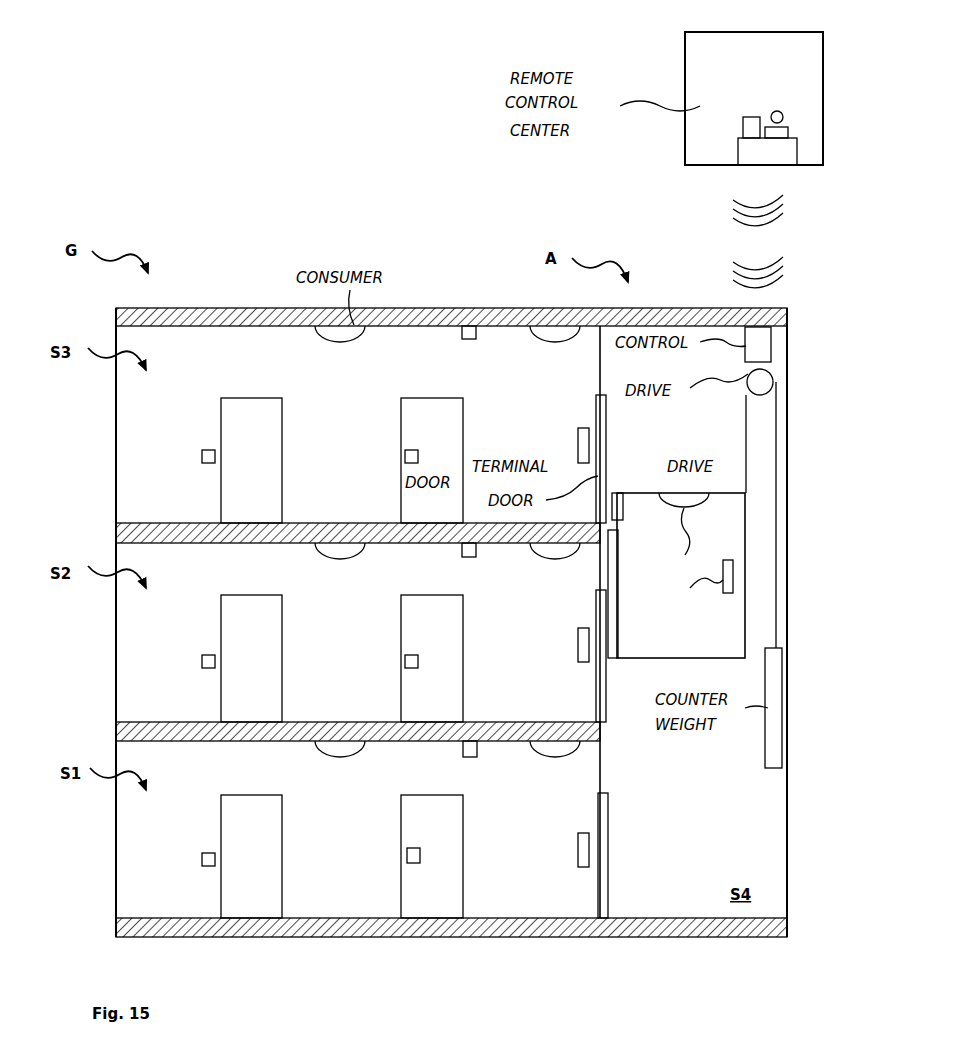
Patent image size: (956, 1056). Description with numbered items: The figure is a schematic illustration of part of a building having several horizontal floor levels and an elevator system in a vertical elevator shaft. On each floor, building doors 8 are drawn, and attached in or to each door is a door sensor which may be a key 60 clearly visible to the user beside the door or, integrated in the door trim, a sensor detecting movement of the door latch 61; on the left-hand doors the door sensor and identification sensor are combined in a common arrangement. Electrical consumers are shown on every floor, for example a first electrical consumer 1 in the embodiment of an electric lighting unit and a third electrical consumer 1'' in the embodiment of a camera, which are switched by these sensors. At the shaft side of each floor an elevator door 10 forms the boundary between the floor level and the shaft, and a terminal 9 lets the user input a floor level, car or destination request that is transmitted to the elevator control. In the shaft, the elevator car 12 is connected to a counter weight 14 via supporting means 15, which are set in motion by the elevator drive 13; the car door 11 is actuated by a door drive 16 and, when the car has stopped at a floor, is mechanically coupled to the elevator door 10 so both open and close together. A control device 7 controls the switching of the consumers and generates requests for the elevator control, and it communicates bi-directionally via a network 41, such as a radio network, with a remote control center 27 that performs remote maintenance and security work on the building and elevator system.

The first electrical consumer 1 is at (417, 558).
The third electrical consumer 1'' is at (434, 555).
The key 60 is at (204, 456).
The door latch 61 is at (406, 456).
The control device 7 is at (700, 352).
The building door 8 is at (230, 506).
The terminal 9 is at (578, 448).
The elevator door 10 is at (596, 423).
The car door 11 is at (613, 625).
The elevator car 12 is at (681, 577).
The elevator drive 13 is at (748, 384).
The counter weight 14 is at (768, 752).
The supporting means 15 is at (745, 422).
The door drive 16 is at (622, 493).
The remote control center 27 is at (754, 98).
The network 41 is at (765, 262).